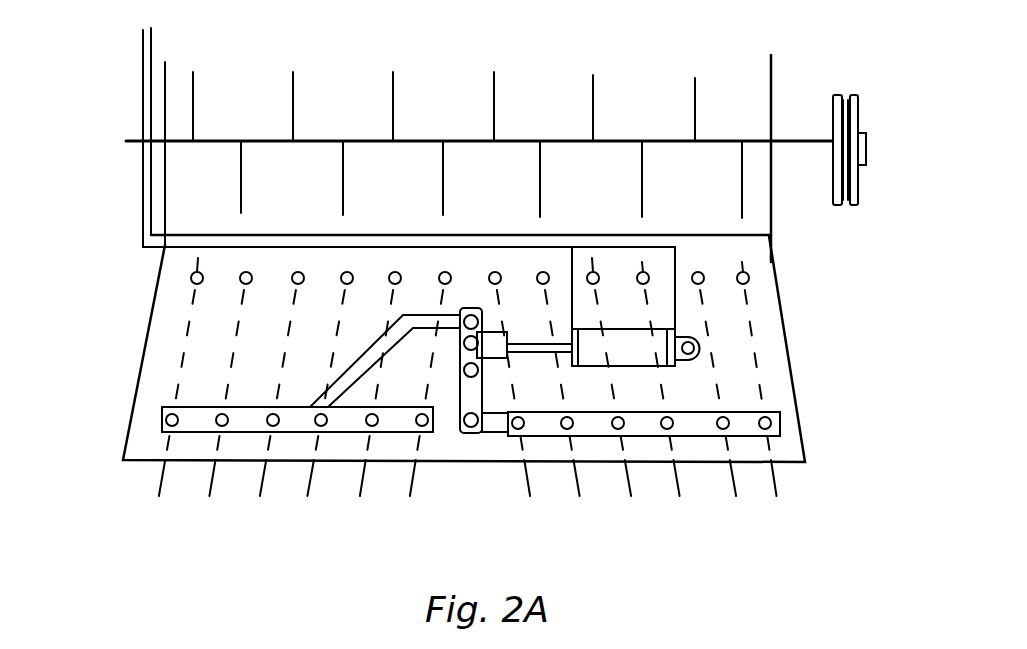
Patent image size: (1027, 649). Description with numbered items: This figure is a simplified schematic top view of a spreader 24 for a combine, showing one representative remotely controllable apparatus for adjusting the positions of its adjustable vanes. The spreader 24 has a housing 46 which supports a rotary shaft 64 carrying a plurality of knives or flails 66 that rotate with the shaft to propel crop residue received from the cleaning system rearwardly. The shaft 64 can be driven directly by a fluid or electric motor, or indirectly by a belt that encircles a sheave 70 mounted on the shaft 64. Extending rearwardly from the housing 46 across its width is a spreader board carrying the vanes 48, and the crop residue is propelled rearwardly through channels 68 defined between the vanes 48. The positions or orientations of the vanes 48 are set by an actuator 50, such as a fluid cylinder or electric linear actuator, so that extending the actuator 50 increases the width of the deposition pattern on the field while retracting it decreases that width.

The spreader 24 is at (104, 104).
The housing 46 is at (771, 218).
The vanes 48 is at (193, 470).
The actuator 50 is at (645, 367).
The rotary shaft 64 is at (803, 141).
The knives or flails 66 is at (293, 103).
The channels 68 is at (132, 470).
The sheave 70 is at (856, 107).